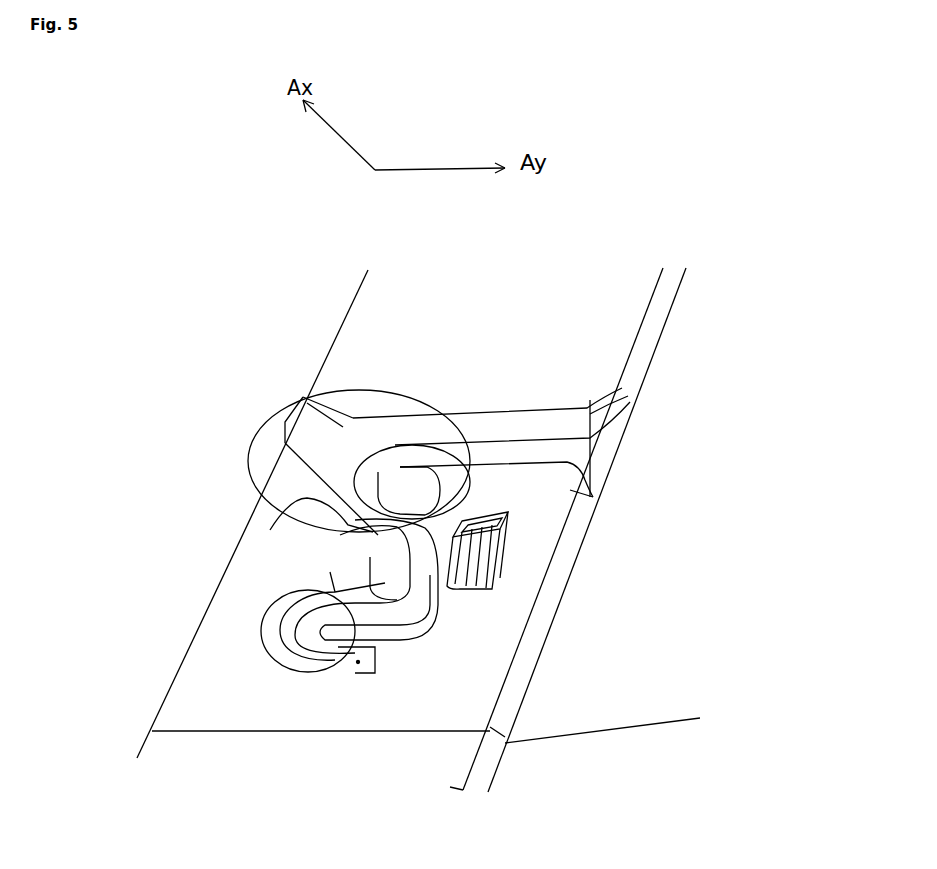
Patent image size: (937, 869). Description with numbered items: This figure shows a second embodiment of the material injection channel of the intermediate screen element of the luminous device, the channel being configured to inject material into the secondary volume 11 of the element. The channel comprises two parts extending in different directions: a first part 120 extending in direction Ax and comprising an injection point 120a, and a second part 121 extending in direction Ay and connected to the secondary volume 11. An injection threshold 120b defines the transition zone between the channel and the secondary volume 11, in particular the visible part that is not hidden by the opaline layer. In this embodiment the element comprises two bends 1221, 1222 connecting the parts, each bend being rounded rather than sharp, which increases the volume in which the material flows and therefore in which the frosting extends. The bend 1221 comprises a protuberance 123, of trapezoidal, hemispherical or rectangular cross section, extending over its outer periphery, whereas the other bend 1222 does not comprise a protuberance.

The secondary volume 11 is at (417, 388).
The second part 121 is at (504, 427).
The protuberance 123 is at (283, 430).
The first part 120 is at (240, 540).
The injection point 120a is at (358, 664).
The injection threshold 120b is at (617, 462).
The bend 1221 is at (264, 430).
The bend 1222 is at (263, 618).